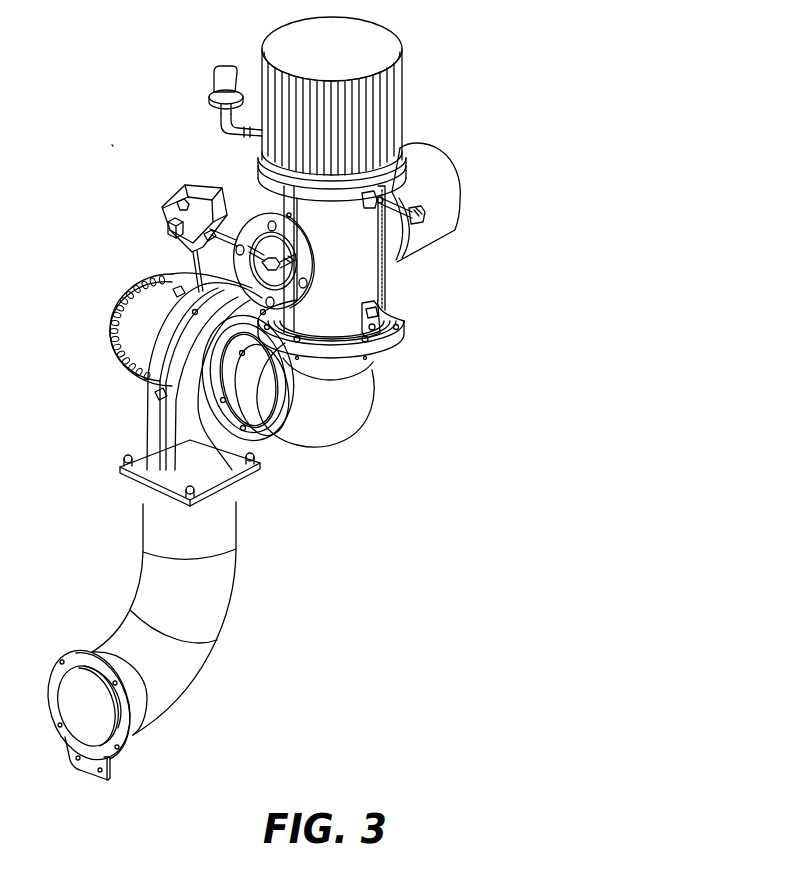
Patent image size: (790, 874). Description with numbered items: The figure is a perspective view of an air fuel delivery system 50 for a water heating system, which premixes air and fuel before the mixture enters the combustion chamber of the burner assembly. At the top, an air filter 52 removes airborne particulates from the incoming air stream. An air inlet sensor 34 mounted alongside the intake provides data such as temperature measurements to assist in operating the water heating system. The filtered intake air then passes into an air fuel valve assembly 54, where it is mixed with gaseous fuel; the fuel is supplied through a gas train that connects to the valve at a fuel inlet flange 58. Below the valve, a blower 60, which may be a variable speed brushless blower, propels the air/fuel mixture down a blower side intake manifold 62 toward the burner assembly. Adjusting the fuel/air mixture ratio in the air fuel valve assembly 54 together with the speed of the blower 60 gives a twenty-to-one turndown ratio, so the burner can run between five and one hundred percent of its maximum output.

The air fuel delivery system 50 is at (123, 178).
The air filter 52 is at (385, 106).
The air fuel valve assembly 54 is at (384, 268).
The air inlet sensor 34 is at (408, 250).
The fuel inlet flange 58 is at (269, 258).
The blower 60 is at (170, 371).
The blower side intake manifold 62 is at (215, 604).